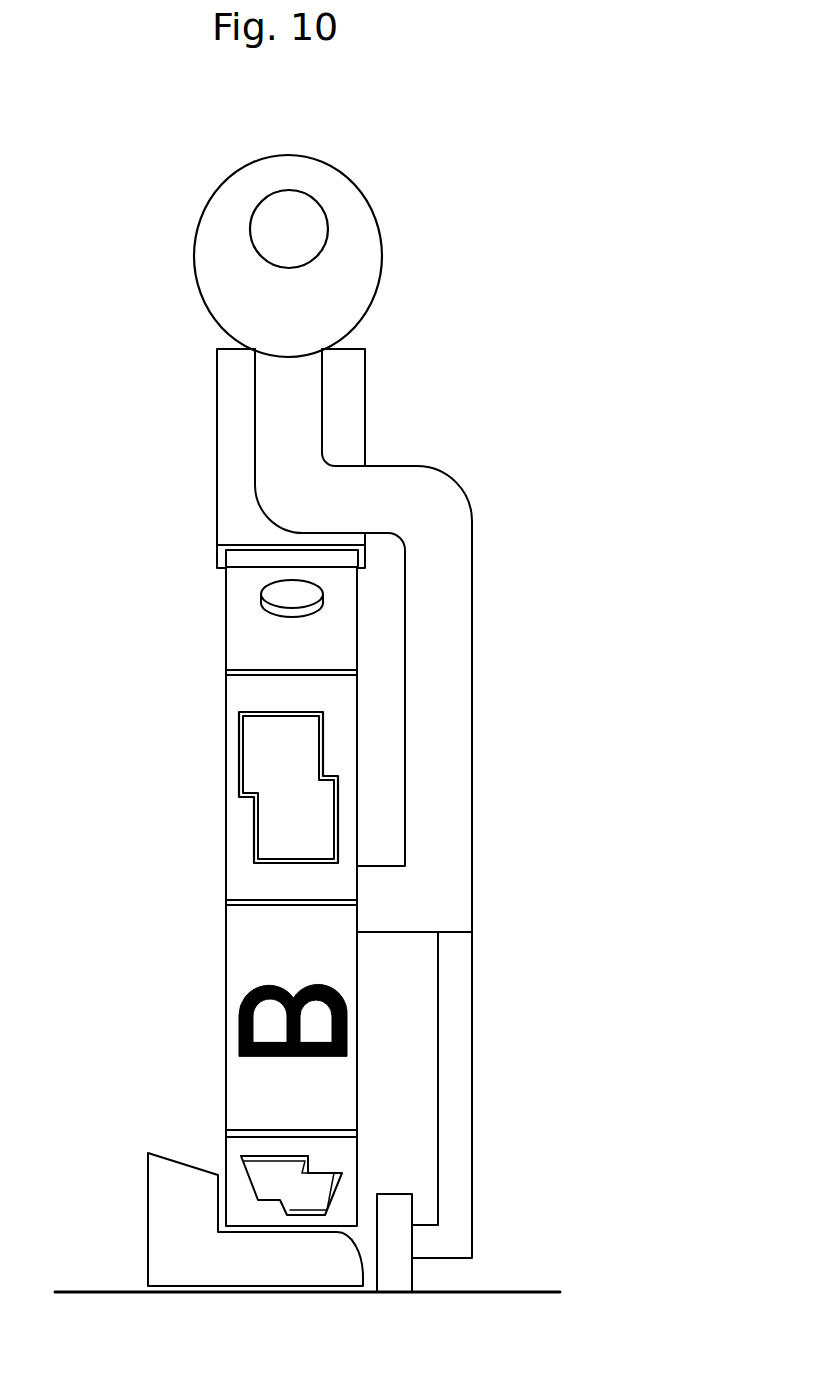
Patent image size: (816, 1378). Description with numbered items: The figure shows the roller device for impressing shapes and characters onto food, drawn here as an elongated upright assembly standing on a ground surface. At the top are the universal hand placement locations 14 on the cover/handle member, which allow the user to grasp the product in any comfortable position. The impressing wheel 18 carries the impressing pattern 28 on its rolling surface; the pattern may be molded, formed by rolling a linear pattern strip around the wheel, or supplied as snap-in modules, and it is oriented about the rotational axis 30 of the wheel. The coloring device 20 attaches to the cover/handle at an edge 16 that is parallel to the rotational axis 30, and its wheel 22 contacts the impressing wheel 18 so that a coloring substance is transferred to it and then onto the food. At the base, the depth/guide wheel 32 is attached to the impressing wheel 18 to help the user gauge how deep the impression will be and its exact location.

The universal hand placement locations 14 is at (345, 273).
The edge 16 is at (293, 418).
The impressing wheel 18 is at (300, 961).
The coloring device 20 is at (233, 477).
The wheel 22 is at (222, 566).
The impressing pattern 28 is at (288, 753).
The rotational axis 30 is at (472, 1066).
The depth/guide wheel 32 is at (412, 1280).